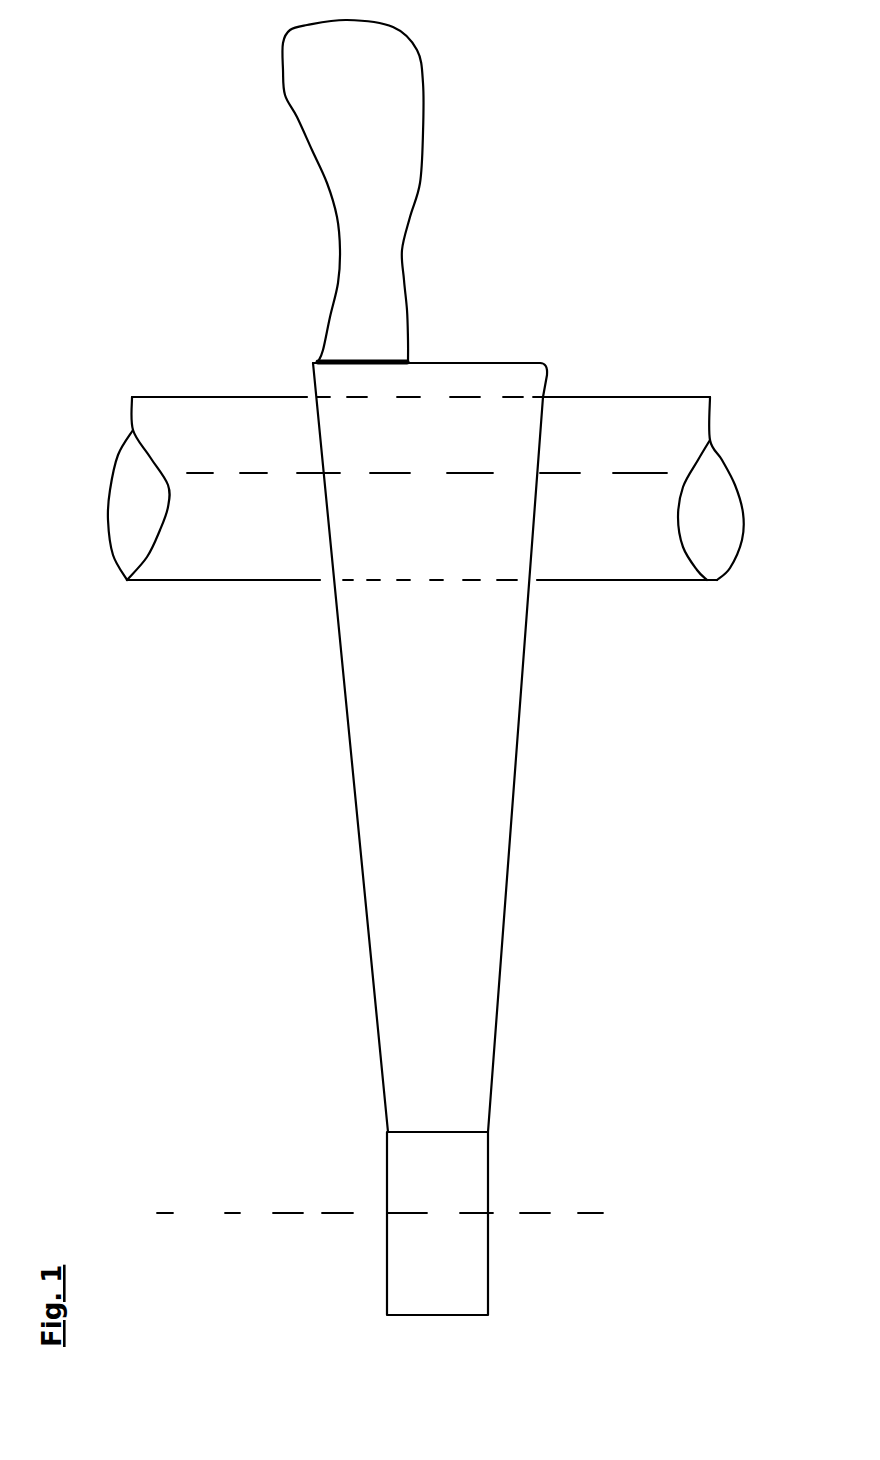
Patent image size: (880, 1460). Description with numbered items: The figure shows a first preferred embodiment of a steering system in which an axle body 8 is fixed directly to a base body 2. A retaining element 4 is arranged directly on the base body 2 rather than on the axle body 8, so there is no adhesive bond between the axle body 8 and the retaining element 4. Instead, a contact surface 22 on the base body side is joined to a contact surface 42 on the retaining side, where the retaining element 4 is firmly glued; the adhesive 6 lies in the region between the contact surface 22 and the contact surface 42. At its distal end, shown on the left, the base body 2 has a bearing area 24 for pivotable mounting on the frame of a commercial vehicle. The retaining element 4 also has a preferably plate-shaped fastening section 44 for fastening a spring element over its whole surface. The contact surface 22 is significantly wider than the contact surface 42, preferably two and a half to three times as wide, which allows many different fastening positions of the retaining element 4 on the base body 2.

The base body 2 is at (533, 677).
The retaining element 4 is at (437, 105).
The adhesive 6 is at (333, 362).
The axle body 8 is at (653, 417).
The contact surface on the base body side 22 is at (490, 377).
The bearing area 24 is at (413, 1177).
The contact surface on the retaining side 42 is at (334, 364).
The fastening section 44 is at (352, 88).